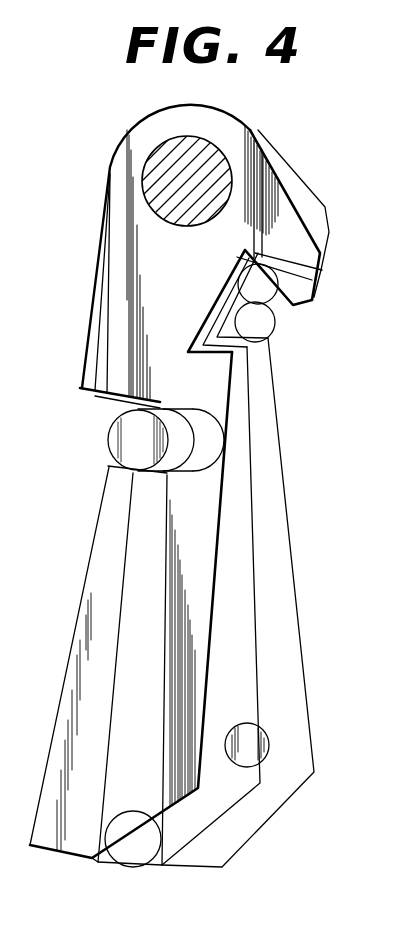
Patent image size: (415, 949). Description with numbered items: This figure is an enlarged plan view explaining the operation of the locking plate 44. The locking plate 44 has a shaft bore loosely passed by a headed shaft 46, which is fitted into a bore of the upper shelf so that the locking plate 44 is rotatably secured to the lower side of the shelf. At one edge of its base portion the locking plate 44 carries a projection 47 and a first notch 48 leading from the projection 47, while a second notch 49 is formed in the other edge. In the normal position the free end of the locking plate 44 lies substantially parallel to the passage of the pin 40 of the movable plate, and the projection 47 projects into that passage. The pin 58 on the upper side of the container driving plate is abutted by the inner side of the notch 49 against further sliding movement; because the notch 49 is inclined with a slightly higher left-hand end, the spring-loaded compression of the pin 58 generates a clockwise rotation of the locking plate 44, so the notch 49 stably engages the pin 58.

The pin 40 is at (266, 741).
The locking plate 44 is at (98, 535).
The headed shaft 46 is at (150, 158).
The projection 47 is at (282, 205).
The first notch 48 is at (215, 315).
The second notch 49 is at (115, 408).
The pin 58 is at (110, 438).